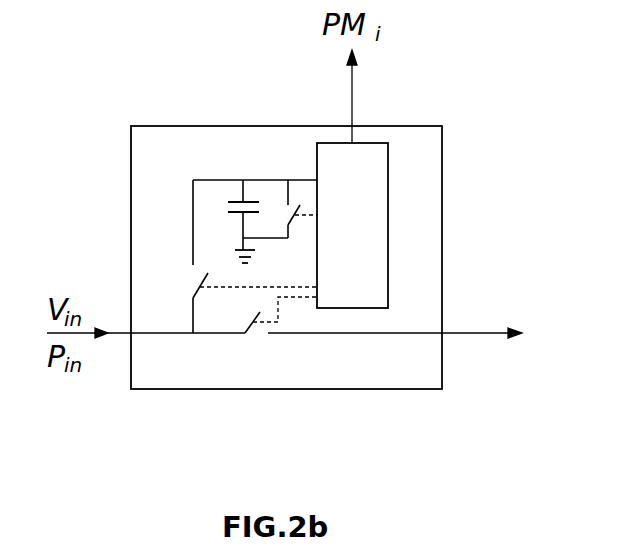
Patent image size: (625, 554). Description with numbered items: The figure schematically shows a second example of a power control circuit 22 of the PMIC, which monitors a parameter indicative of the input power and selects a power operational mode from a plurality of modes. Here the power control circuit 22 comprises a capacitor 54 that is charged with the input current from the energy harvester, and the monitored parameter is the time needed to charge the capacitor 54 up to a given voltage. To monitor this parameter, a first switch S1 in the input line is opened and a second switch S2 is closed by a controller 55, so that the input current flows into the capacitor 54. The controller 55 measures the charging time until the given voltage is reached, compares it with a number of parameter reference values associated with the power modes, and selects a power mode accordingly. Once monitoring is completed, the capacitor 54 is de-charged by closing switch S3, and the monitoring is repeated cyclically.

The power control circuit 22 is at (204, 390).
The capacitor 54 is at (240, 192).
The controller 55 is at (388, 213).
The first switch S1 is at (255, 323).
The second switch S2 is at (201, 287).
The switch S3 is at (295, 222).